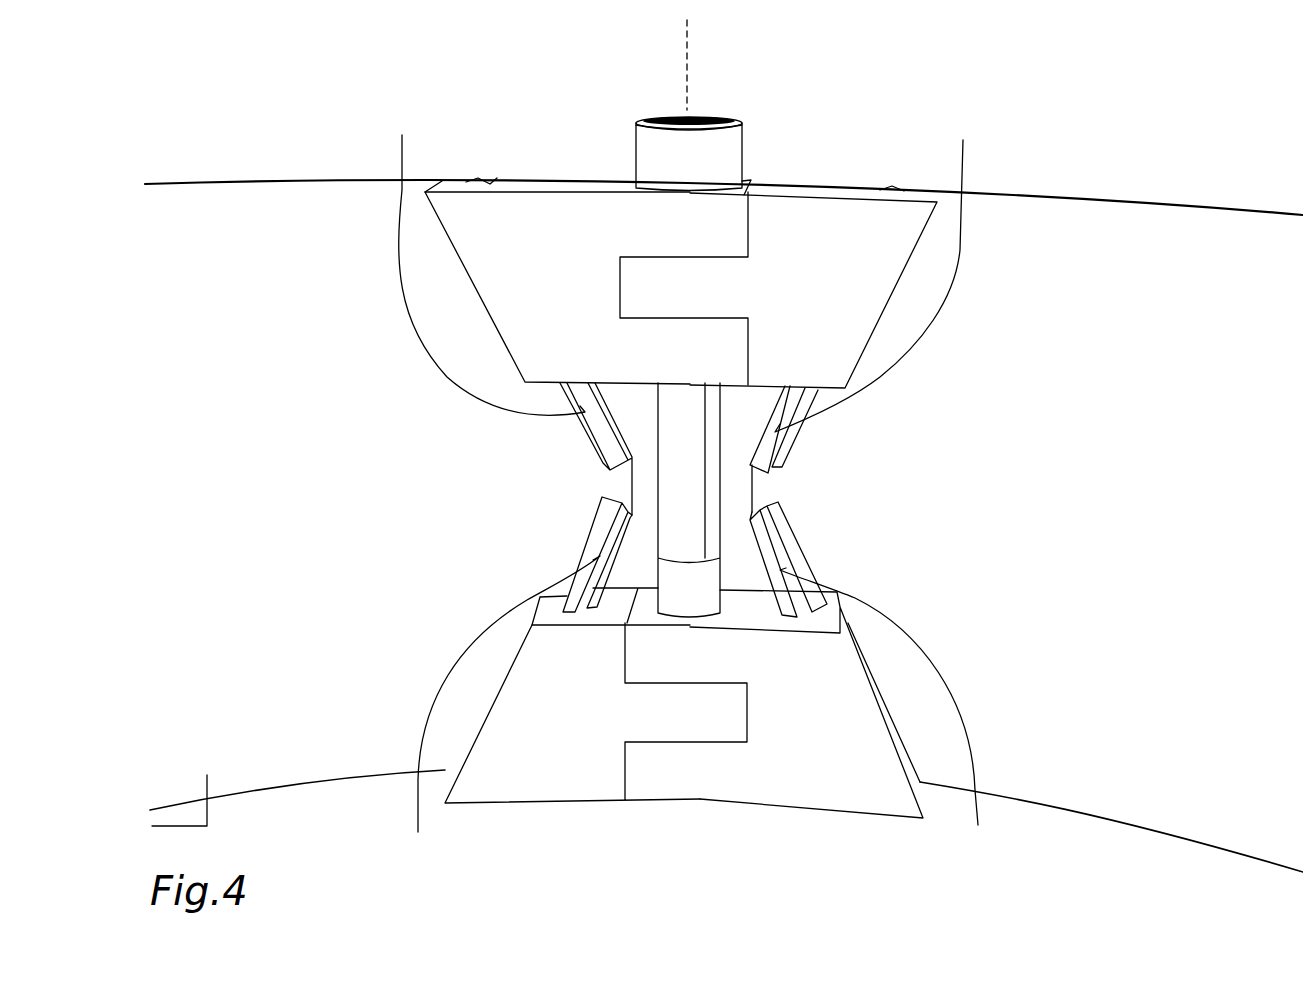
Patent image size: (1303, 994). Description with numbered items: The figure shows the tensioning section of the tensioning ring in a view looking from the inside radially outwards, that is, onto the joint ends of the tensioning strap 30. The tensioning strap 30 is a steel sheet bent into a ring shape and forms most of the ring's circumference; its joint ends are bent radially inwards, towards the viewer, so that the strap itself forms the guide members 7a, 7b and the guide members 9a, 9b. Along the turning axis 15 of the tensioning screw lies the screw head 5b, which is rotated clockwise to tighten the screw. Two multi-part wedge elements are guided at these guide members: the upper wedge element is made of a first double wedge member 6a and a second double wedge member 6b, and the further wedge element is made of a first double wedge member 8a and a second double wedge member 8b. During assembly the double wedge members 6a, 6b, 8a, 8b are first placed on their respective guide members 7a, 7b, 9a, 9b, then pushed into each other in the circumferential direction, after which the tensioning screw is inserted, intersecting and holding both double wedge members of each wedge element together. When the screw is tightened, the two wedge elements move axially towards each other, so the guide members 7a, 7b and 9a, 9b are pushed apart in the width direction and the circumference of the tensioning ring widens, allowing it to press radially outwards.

The screw head 5b is at (672, 157).
The turning axis 15 is at (690, 74).
The first double wedge member 6a is at (548, 228).
The second double wedge member 6b is at (840, 232).
The guide member 7a is at (495, 304).
The guide member 7b is at (874, 305).
The first double wedge member 8a is at (797, 780).
The second double wedge member 8b is at (550, 775).
The guide member 9a is at (885, 695).
The guide member 9b is at (517, 692).
The tensioning strap 30 is at (997, 270).